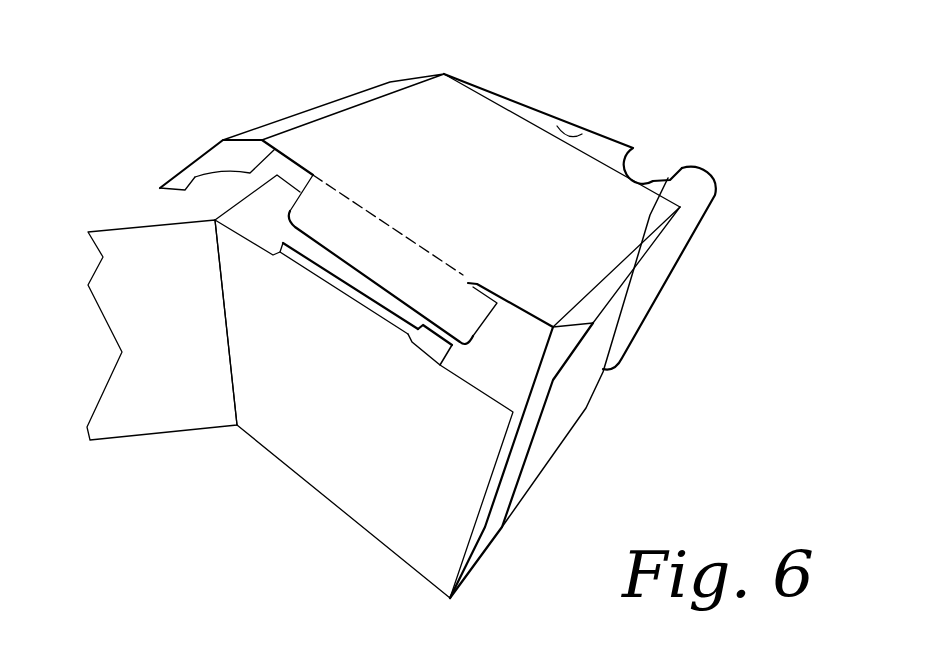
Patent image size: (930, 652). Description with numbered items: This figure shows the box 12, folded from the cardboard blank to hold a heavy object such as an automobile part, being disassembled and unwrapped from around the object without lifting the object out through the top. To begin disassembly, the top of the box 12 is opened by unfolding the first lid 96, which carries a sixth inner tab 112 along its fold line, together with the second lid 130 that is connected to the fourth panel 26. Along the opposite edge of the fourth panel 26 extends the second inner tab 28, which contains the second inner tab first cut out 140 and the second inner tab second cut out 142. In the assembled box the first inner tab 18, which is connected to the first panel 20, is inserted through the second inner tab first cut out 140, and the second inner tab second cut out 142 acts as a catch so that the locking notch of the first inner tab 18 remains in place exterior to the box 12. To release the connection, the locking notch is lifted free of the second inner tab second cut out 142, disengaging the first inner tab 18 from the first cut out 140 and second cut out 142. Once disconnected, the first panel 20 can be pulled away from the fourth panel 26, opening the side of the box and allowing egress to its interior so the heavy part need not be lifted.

The box 12 is at (148, 62).
The first panel 20 is at (493, 185).
The first inner tab 18 is at (403, 277).
The fourth panel 26 is at (368, 423).
The second inner tab 28 is at (257, 222).
The first lid 96 is at (587, 128).
The sixth inner tab 112 is at (695, 196).
The second lid 130 is at (180, 350).
The second inner tab first cut out 140 is at (364, 302).
The second inner tab second cut out 142 is at (423, 360).